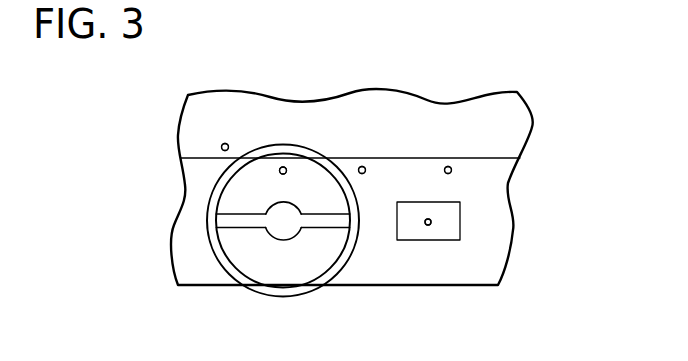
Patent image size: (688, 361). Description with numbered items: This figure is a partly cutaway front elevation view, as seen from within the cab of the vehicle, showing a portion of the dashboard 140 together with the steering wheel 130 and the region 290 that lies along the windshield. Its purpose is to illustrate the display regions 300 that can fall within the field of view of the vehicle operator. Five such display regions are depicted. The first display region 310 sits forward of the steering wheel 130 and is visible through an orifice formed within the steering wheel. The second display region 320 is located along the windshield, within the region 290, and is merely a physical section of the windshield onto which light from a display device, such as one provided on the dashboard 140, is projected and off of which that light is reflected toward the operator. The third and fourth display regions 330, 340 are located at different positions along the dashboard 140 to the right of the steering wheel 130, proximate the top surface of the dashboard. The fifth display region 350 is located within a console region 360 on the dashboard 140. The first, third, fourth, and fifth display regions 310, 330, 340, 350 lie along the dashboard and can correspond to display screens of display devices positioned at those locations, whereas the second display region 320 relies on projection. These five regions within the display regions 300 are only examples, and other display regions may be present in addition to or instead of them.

The steering wheel 130 is at (210, 243).
The dashboard 140 is at (385, 265).
The region along the windshield 290 is at (226, 110).
The display regions 300 is at (337, 185).
The first display region 310 is at (280, 172).
The second display region 320 is at (225, 144).
The third display region 330 is at (362, 166).
The fourth display region 340 is at (448, 166).
The fifth display region 350 is at (431, 221).
The console region 360 is at (460, 232).